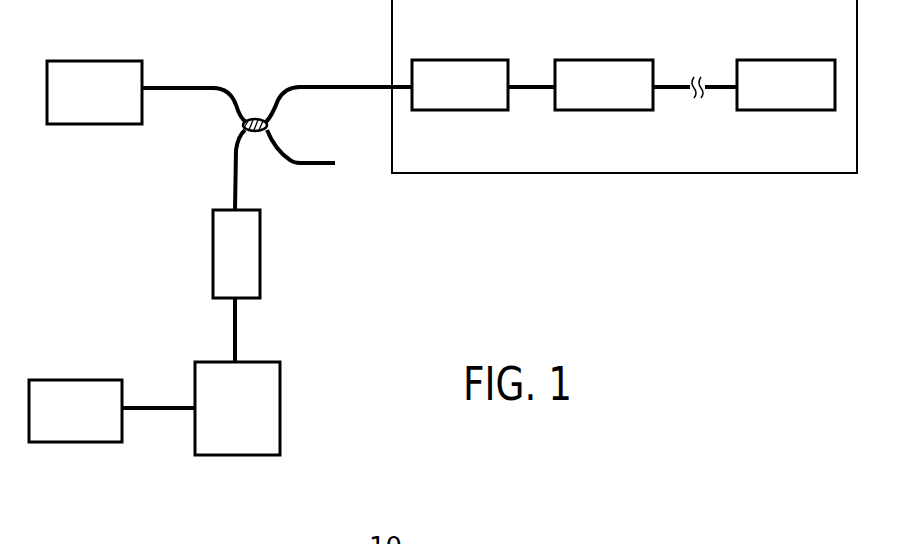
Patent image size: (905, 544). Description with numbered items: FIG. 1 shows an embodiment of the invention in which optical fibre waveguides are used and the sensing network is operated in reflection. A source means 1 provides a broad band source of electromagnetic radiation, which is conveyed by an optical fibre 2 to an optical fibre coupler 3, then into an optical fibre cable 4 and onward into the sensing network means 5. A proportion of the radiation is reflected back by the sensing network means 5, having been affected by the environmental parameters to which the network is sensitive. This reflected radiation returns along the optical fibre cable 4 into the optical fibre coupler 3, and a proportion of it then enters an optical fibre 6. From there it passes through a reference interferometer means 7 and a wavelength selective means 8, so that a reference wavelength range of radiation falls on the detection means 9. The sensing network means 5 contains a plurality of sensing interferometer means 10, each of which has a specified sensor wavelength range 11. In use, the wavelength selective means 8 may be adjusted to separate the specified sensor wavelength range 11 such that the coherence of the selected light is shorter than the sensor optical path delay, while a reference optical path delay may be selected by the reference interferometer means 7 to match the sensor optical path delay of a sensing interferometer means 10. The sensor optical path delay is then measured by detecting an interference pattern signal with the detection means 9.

The source means 1 is at (97, 60).
The optical fibre 2 is at (200, 85).
The optical fibre coupler 3 is at (253, 110).
The optical fibre cable 4 is at (326, 86).
The sensing network means 5 is at (634, 175).
The optical fibre 6 is at (233, 175).
The reference interferometer means 7 is at (262, 252).
The wavelength selective means 8 is at (282, 410).
The detection means 9 is at (80, 380).
The sensing interferometer means 10 is at (576, 60).
The sensor wavelength range 11 is at (583, 87).